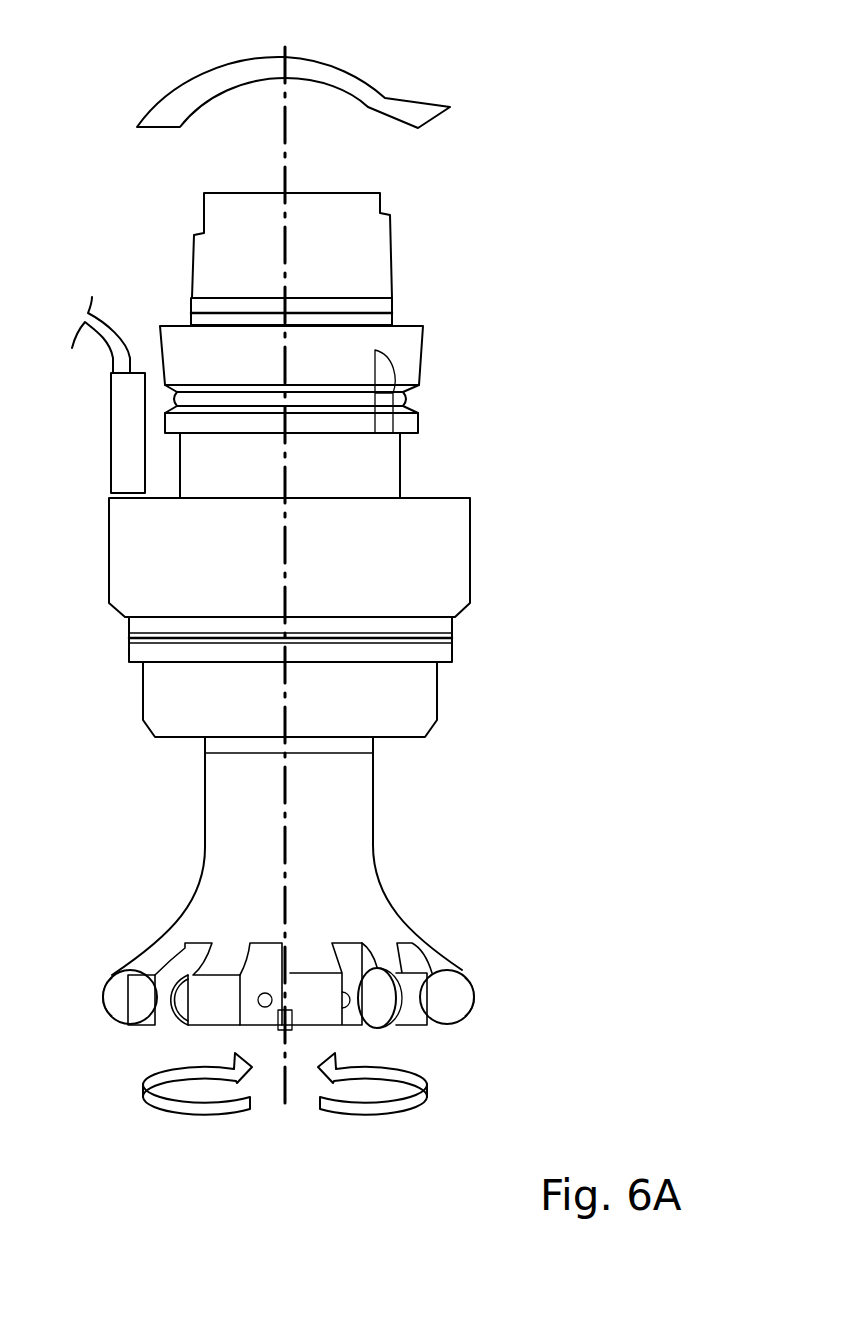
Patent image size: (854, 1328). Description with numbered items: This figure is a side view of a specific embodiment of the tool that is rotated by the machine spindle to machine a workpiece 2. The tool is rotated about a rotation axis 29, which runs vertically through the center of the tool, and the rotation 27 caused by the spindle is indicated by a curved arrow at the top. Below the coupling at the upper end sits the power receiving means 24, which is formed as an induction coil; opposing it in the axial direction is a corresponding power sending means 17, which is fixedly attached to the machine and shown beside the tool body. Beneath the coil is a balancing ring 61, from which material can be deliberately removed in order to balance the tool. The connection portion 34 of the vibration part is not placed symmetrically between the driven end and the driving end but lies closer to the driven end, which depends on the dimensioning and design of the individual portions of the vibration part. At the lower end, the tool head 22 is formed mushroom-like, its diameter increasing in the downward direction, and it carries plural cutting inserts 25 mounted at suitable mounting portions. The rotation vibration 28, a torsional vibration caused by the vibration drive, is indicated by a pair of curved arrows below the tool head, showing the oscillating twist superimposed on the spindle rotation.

The workpiece 2 is at (435, 200).
The power sending means 17 is at (120, 452).
The tool head 22 is at (357, 923).
The power receiving means 24 is at (438, 558).
The cutting inserts 25 is at (447, 993).
The rotation 27 is at (407, 102).
The rotation vibration 28 is at (407, 1093).
The rotation axis 29 is at (288, 130).
The connection portion 34 is at (378, 742).
The balancing ring 61 is at (433, 647).